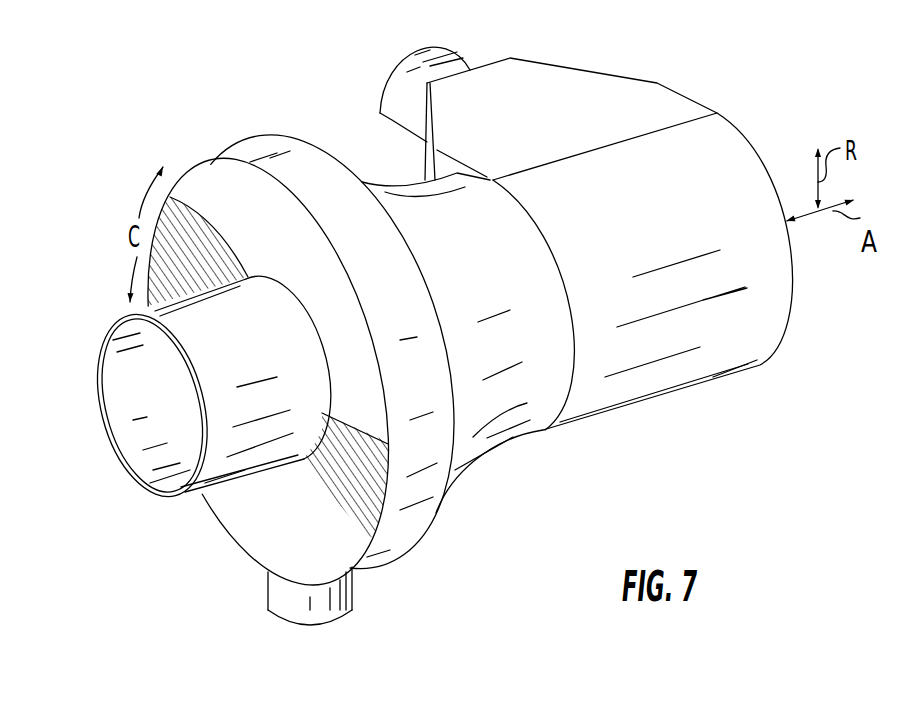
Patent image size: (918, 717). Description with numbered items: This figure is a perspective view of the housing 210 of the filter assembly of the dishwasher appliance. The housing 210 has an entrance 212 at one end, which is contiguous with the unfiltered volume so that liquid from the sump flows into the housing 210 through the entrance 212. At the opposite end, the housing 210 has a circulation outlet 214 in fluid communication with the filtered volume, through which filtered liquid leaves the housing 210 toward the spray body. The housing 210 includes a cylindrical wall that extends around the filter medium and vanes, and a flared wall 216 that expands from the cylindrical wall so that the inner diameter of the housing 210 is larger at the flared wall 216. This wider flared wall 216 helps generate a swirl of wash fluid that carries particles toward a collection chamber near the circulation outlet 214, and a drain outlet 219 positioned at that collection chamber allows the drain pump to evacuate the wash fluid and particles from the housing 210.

The housing 210 is at (543, 433).
The entrance 212 is at (388, 57).
The circulation outlet 214 is at (135, 408).
The flared wall 216 is at (483, 438).
The drain outlet 219 is at (310, 632).